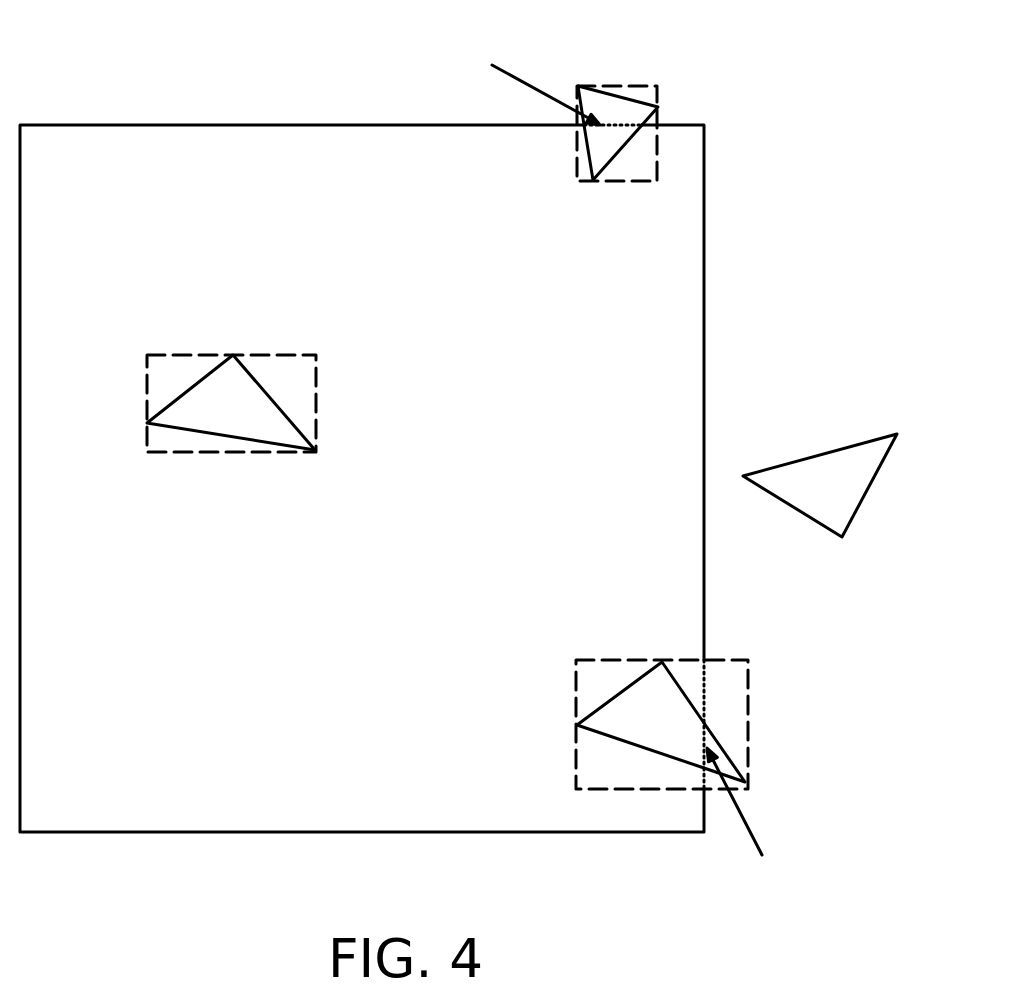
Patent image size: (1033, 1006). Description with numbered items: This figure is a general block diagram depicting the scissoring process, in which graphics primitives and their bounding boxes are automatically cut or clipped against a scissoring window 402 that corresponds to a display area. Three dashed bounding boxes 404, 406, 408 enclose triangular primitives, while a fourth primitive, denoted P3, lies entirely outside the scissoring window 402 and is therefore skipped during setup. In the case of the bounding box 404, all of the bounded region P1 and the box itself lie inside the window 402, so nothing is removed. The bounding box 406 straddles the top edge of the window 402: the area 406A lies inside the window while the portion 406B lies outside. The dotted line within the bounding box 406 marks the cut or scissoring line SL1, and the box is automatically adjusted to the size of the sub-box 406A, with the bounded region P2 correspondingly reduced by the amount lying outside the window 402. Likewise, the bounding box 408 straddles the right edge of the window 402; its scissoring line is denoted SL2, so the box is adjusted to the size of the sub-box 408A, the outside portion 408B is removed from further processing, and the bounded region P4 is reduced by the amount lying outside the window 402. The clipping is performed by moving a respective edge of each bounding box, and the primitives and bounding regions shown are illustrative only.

The scissoring window 402 is at (704, 266).
The bounding box 404 is at (300, 377).
The bounding box 406 is at (602, 96).
The area 406A is at (630, 167).
The portion 406B is at (582, 117).
The bounding box 408 is at (733, 778).
The sub-box 408A is at (597, 767).
The portion 408B is at (727, 703).
The bounded region P1 is at (233, 403).
The bounded region P2 is at (598, 97).
The primitive P3 is at (823, 493).
The bounded region P4 is at (730, 778).
The scissoring line SL1 is at (515, 89).
The scissoring line SL2 is at (759, 808).